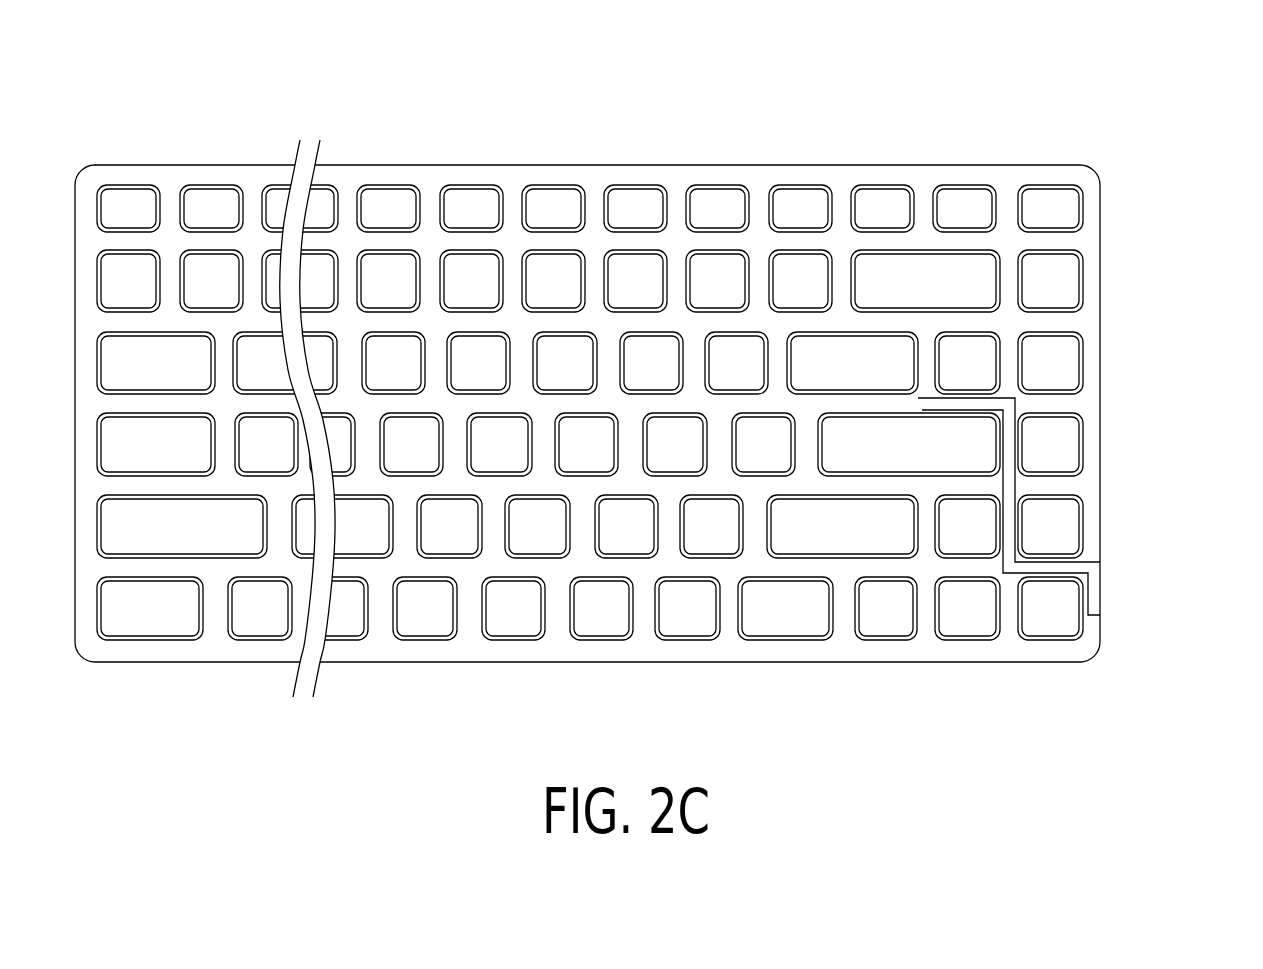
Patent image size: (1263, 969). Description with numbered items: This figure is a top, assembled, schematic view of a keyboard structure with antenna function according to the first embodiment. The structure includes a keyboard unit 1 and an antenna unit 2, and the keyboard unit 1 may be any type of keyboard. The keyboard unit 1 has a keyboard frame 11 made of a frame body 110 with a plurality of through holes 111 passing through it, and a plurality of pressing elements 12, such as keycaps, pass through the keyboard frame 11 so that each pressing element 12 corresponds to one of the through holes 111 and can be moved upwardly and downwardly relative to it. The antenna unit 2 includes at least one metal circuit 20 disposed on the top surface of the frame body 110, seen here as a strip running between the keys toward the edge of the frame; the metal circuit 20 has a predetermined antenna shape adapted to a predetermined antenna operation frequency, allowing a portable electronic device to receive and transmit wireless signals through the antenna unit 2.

The keyboard unit 1 is at (651, 368).
The keyboard frame 11 is at (1122, 272).
The frame body 110 is at (1078, 240).
The through holes 111 is at (1080, 277).
The pressing elements 12 is at (1062, 210).
The antenna unit 2 is at (1070, 506).
The metal circuit 20 is at (1095, 588).